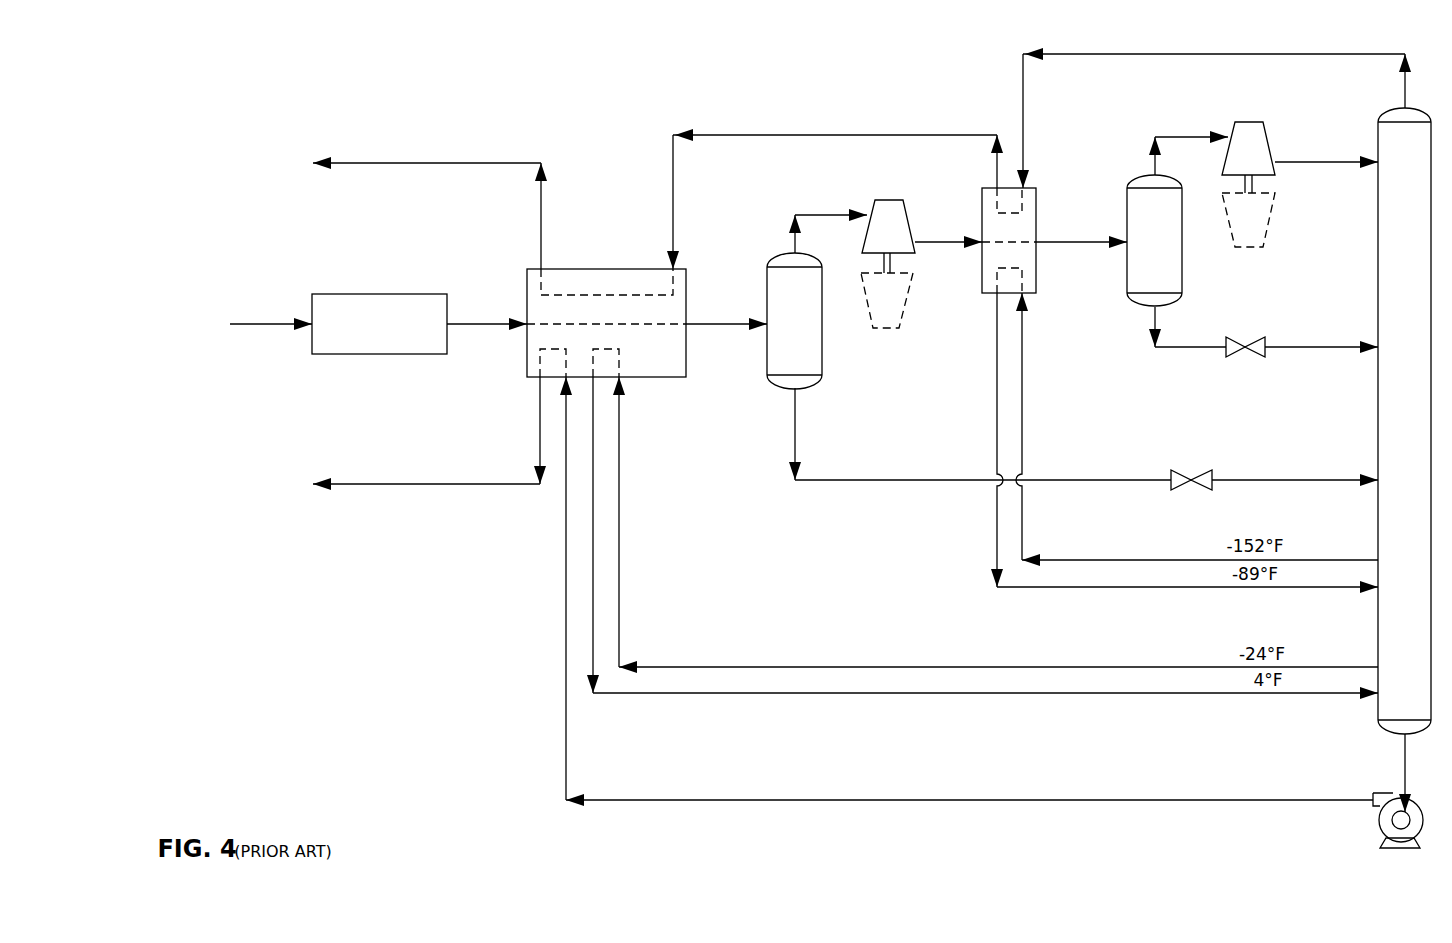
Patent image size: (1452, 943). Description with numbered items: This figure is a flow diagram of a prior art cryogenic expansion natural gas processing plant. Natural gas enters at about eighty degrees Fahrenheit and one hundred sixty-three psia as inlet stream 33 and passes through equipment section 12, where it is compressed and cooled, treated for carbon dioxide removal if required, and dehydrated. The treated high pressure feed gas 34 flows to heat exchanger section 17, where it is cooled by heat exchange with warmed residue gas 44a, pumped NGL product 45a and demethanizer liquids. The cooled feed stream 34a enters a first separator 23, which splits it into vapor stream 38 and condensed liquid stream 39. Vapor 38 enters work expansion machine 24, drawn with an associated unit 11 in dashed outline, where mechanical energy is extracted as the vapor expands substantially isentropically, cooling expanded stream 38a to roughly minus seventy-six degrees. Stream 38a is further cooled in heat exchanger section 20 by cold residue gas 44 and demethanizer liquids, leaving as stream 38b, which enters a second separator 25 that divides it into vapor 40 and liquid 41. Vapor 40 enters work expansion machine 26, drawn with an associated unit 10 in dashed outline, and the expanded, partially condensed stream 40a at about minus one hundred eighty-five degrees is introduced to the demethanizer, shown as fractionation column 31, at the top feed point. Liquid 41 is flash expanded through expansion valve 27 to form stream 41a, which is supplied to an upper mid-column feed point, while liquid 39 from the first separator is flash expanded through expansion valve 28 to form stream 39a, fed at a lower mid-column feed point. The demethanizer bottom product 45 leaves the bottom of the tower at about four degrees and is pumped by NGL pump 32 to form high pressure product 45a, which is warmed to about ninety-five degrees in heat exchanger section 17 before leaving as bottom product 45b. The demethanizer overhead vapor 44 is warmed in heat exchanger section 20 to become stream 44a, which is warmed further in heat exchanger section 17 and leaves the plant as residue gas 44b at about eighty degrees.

The expansion machine (work expansion) 10 is at (1268, 220).
The expansion machine (work expansion) 11 is at (909, 300).
The equipment section 12 is at (380, 354).
The heat exchanger section 17 is at (663, 377).
The heat exchanger section 20 is at (1036, 282).
The first separator 23 is at (822, 345).
The work expansion machine 24 is at (903, 202).
The second separator 25 is at (1182, 268).
The work expansion machine 26 is at (1264, 124).
The expansion valve 27 is at (1226, 339).
The expansion valve 28 is at (1171, 490).
The fractionation column 31 is at (1378, 455).
The NGL pump 32 is at (1373, 832).
The inlet gas stream 33 is at (262, 324).
The treated high pressure feed gas stream 34 is at (480, 324).
The cooled feed stream 34a is at (720, 324).
The vapor stream 38 is at (821, 215).
The expanded stream 38a is at (943, 242).
The further cooled stream 38b is at (1075, 242).
The condensed liquid stream 39 is at (847, 480).
The expanded stream 39a is at (1272, 480).
The vapor stream 40 is at (1190, 137).
The expanded partially condensed stream 40a is at (1325, 162).
The condensed liquid stream 41 is at (1167, 347).
The expanded stream 41a is at (1310, 347).
The demethanizer overhead vapor stream 44 is at (1276, 54).
The warmed residue gas stream 44a is at (838, 135).
The residue gas stream 44b is at (477, 163).
The demethanizer bottom product stream 45 is at (1402, 750).
The high pressure product stream 45a is at (1265, 800).
The bottom product stream 45b is at (473, 484).